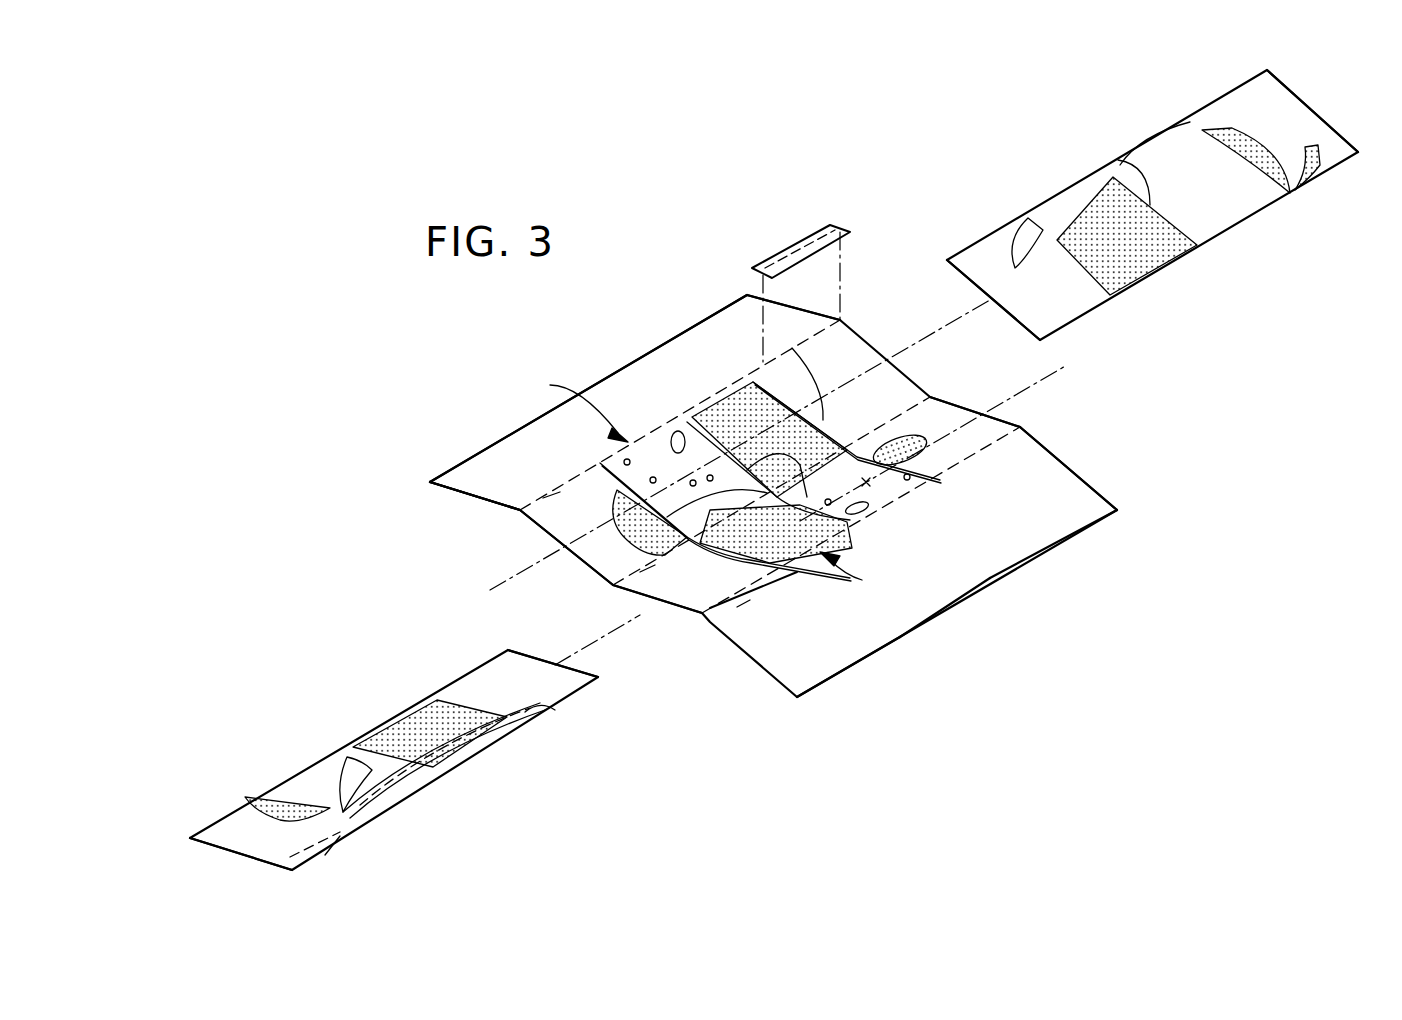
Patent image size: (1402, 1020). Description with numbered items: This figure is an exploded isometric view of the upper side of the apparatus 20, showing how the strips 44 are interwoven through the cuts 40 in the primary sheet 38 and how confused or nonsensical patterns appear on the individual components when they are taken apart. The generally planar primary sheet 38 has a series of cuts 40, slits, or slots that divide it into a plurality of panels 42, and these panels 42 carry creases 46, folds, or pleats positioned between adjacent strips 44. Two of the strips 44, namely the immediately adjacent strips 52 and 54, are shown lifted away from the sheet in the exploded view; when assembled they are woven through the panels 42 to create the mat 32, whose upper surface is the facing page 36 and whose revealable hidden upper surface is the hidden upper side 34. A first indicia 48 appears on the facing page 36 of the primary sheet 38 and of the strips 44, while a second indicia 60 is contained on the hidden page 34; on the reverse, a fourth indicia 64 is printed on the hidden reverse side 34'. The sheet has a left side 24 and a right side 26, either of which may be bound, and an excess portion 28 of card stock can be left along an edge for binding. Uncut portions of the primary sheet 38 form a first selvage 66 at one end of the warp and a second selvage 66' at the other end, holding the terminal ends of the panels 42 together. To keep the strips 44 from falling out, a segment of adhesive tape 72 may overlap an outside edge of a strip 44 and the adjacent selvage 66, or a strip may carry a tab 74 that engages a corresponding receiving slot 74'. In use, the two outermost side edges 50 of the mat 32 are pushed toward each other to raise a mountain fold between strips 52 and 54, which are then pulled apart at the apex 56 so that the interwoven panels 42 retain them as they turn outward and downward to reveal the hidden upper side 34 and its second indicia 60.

The apparatus 20 is at (690, 752).
The left side 24 is at (500, 437).
The right side 26 is at (990, 578).
The excess portion 28 is at (455, 468).
The mat 32 is at (950, 264).
The hidden upper side 34 is at (773, 487).
The hidden reverse side 34' is at (774, 470).
The facing page 36 is at (1325, 178).
The primary sheet 38 is at (1098, 495).
The cuts 40 is at (860, 440).
The panels 42 is at (948, 405).
The strips 44 is at (774, 470).
The creases 46 is at (737, 607).
The first indicia 48 is at (1295, 195).
The outermost side edges 50 is at (706, 482).
The strip 52 is at (1250, 85).
The strip 54 is at (300, 843).
The apex 56 is at (613, 593).
The second indicia 60 is at (915, 508).
The fourth indicia 64 is at (1138, 155).
The first selvage 66 is at (588, 388).
The second selvage 66' is at (948, 617).
The adhesive tape 72 is at (812, 228).
The tab 74 is at (417, 780).
The receiving slot 74' is at (778, 618).